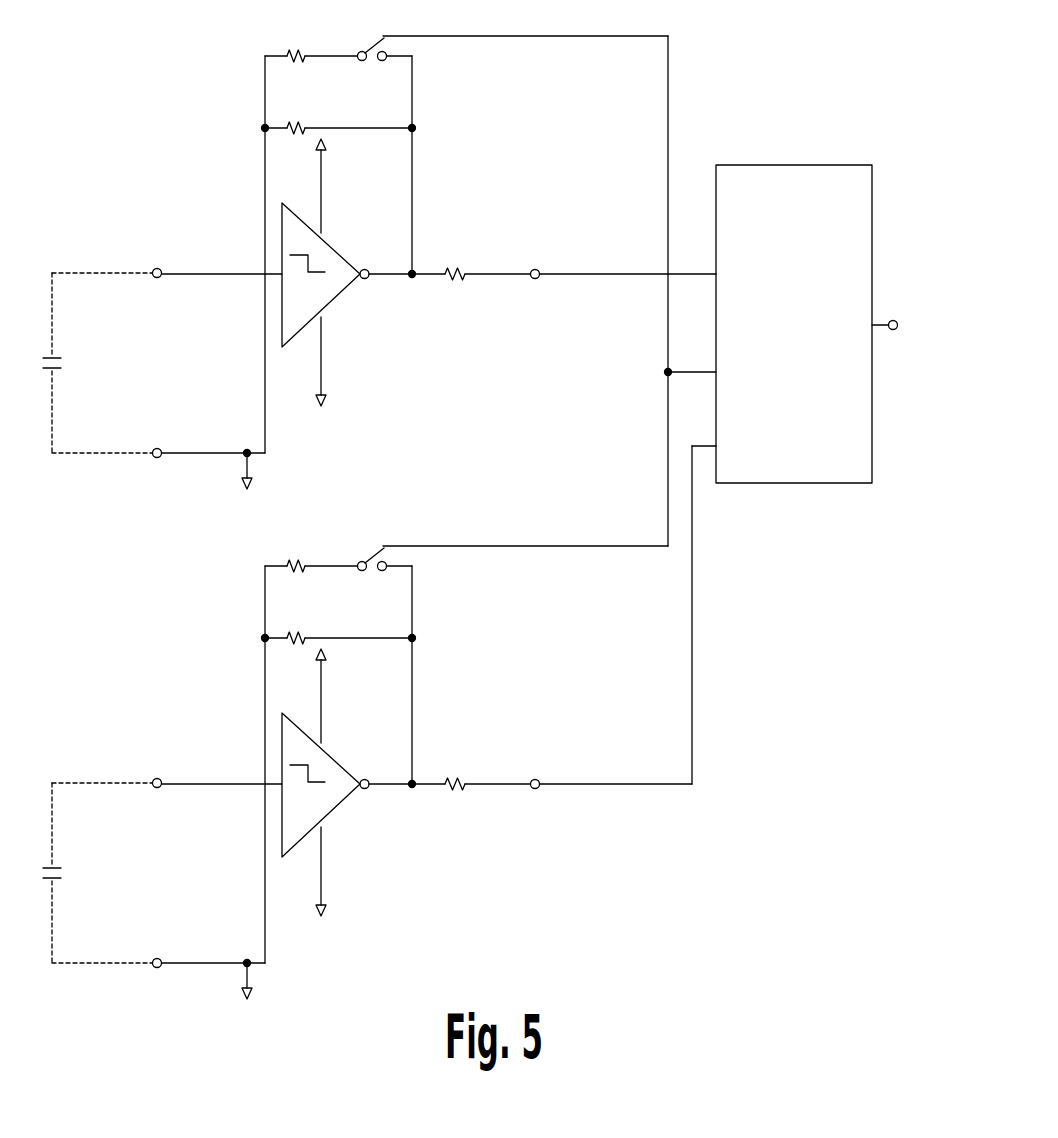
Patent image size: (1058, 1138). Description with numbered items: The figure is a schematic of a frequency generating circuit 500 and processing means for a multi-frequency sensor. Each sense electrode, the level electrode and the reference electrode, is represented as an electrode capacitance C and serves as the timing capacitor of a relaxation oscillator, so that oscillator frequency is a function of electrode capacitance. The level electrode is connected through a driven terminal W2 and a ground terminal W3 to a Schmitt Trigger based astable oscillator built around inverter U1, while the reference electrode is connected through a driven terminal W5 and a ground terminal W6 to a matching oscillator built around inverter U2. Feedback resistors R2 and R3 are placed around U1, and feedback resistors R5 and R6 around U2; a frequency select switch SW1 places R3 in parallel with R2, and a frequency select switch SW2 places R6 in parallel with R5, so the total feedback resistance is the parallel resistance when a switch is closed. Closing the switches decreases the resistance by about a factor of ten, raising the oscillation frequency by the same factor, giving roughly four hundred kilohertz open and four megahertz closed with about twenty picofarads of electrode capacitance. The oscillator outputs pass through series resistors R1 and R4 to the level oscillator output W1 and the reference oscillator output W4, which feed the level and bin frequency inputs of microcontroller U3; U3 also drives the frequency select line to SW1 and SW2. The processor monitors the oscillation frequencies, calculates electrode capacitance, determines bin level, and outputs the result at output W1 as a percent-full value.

The frequency generating circuit 500 is at (780, 33).
The level oscillator Schmitt inverter NC7S214 U1 is at (335, 276).
The reference oscillator Schmitt inverter NC7S214 U2 is at (335, 786).
The microcontroller U3 is at (794, 324).
The resistor 100k R1 is at (487, 253).
The resistor 100k R2 is at (338, 107).
The resistor 100k R3 is at (311, 34).
The resistor 100k R4 is at (487, 763).
The resistor 100k R5 is at (338, 617).
The resistor 100k R6 is at (311, 544).
The switch SW1 is at (384, 69).
The switch SW2 is at (384, 579).
The level oscillator output / % full output W1 is at (746, 319).
The driven terminal W2 is at (218, 278).
The ground terminal W3 is at (209, 455).
The reference oscillator output W4 is at (612, 820).
The driven terminal W5 is at (218, 787).
The ground terminal W6 is at (209, 964).
The electrode capacitance C is at (122, 363).